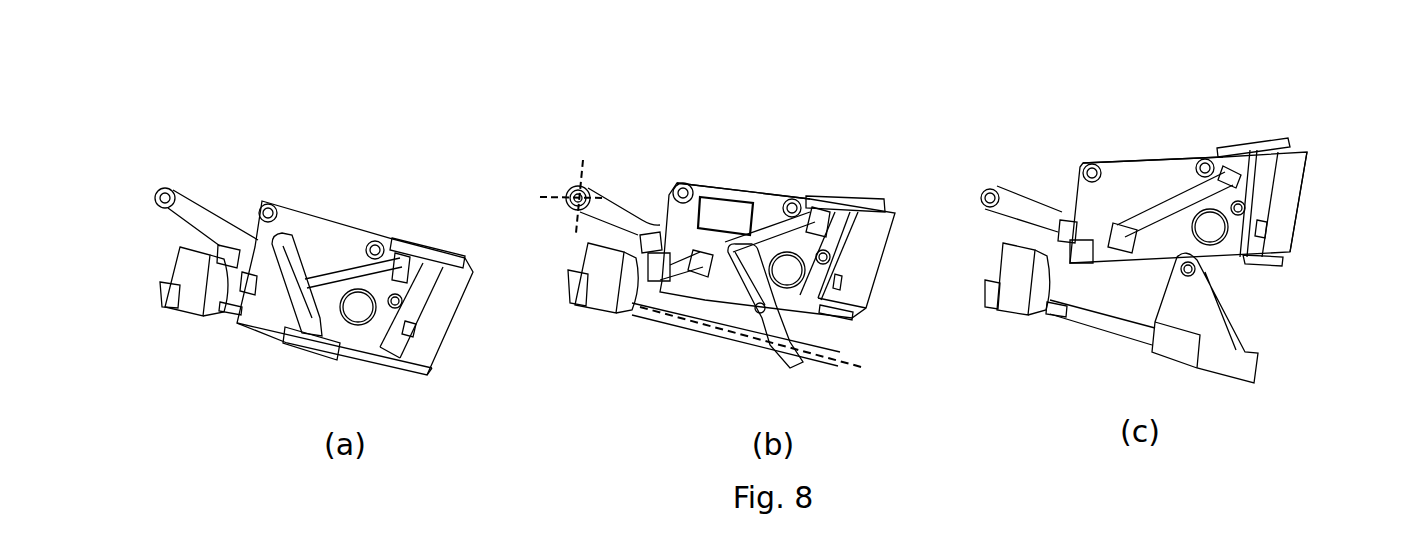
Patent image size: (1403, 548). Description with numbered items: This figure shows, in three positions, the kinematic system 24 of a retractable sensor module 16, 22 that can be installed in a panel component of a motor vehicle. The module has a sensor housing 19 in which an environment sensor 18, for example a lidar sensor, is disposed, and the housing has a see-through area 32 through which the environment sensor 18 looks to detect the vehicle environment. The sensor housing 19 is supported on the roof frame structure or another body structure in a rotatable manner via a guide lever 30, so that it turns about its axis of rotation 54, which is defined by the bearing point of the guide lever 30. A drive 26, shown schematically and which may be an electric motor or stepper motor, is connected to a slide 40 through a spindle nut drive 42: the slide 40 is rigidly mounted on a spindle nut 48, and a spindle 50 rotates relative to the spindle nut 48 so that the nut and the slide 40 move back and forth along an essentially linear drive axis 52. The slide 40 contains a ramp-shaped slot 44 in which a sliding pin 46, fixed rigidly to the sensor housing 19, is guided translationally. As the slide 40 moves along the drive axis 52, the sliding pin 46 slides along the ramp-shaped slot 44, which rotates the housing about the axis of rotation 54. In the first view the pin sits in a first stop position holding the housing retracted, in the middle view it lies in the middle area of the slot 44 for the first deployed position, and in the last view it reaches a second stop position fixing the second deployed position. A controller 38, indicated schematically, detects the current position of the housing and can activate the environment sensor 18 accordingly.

The first sensor module 16 is at (153, 334).
The second sensor module 22 is at (162, 345).
The kinematic system 24 is at (255, 362).
The second environment sensor 18 is at (333, 238).
The sensor housing 19 is at (413, 245).
The drive 26 is at (600, 282).
The guide lever 30 is at (200, 232).
The see-through area 32 is at (1282, 206).
The controller 38 is at (722, 212).
The slide 40 is at (730, 292).
The spindle nut drive 42 is at (663, 313).
The slot 44 is at (287, 248).
The sliding pin 46 is at (325, 340).
The spindle nut 48 is at (1175, 340).
The spindle 50 is at (1073, 310).
The drive axis 52 is at (853, 365).
The axis of rotation 54 is at (578, 197).